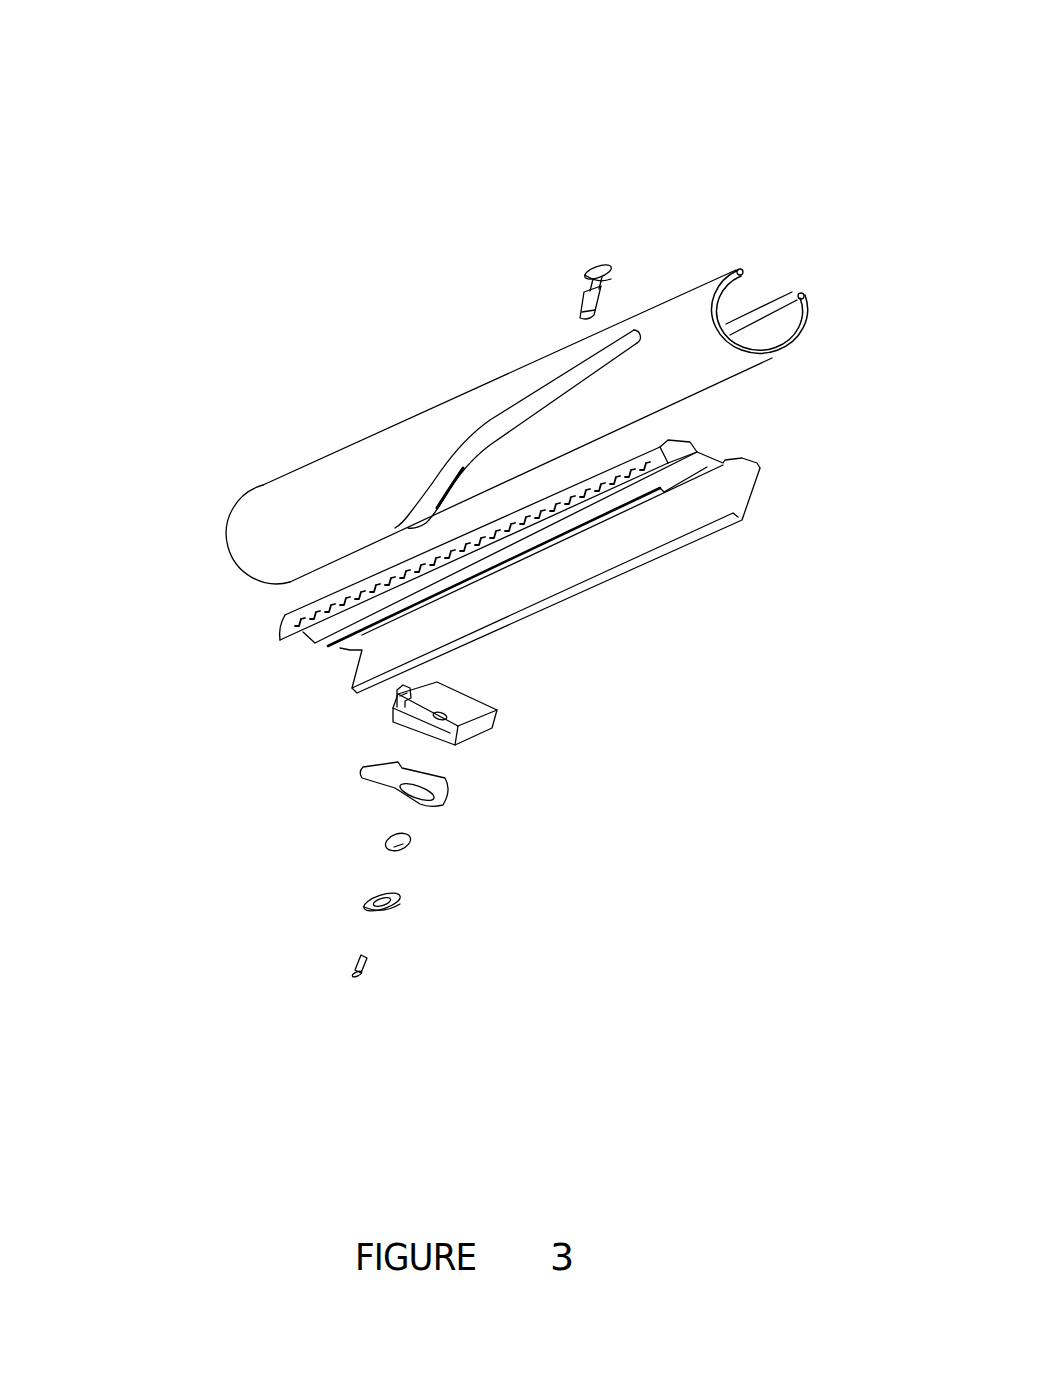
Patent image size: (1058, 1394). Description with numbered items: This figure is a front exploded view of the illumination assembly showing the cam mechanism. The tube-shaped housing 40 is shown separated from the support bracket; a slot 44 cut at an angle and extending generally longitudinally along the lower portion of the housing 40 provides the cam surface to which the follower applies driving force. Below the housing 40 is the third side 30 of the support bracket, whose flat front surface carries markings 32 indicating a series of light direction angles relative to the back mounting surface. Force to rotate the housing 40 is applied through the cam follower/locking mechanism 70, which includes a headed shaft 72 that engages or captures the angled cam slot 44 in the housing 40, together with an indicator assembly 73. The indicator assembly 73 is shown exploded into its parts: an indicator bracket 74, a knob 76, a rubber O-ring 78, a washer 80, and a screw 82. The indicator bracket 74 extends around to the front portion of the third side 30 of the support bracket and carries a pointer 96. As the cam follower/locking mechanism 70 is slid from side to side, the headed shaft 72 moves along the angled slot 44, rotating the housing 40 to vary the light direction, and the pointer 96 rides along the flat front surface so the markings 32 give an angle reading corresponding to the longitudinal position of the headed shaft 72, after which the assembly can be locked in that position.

The cam follower/locking mechanism 70 is at (226, 394).
The housing 40 is at (448, 424).
The slot 44 is at (637, 327).
The headed shaft 72 is at (604, 258).
The markings 32 is at (346, 595).
The third side 30 is at (284, 632).
The indicator bracket 74 is at (484, 698).
The pointer 96 is at (394, 703).
The knob 76 is at (385, 785).
The rubber O-ring 78 is at (384, 845).
The washer 80 is at (370, 908).
The screw 82 is at (355, 973).
The indicator assembly 73 is at (705, 617).